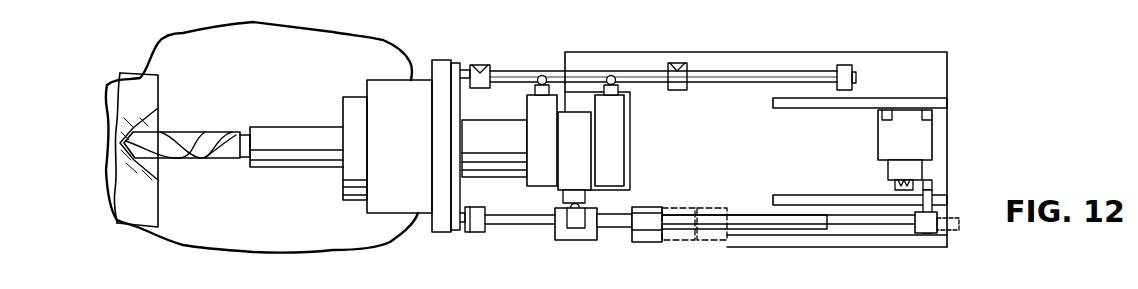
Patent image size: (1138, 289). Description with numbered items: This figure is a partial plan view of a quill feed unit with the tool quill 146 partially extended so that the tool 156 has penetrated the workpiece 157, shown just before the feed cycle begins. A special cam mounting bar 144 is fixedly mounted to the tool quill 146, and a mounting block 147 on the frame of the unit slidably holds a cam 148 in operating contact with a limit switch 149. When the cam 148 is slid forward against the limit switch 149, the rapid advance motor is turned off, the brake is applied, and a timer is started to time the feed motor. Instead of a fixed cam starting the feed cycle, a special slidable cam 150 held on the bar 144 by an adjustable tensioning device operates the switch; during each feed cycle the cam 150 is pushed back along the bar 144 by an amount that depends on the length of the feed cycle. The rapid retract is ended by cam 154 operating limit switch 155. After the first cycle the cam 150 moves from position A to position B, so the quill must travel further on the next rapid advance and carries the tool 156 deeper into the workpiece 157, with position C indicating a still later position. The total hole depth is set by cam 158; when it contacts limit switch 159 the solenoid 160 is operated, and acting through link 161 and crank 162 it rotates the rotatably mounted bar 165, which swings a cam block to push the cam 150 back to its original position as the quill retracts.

The cam mounting bar 144 is at (785, 234).
The tool quill 146 is at (444, 232).
The mounting block 147 is at (577, 238).
The cam 148 is at (612, 215).
The limit switch 149 is at (577, 111).
The slidable cam 150 is at (657, 207).
The cam 154 is at (483, 65).
The limit switch 155 is at (527, 107).
The tool 156 is at (225, 132).
The workpiece 157 is at (147, 75).
The cam 158 is at (688, 72).
The limit switch 159 is at (631, 118).
The solenoid 160 is at (878, 142).
The link 161 is at (934, 187).
The crank 162 is at (933, 235).
The rotatably mounted bar 165 is at (873, 234).
The position A is at (650, 237).
The position B is at (688, 239).
The position C is at (720, 240).